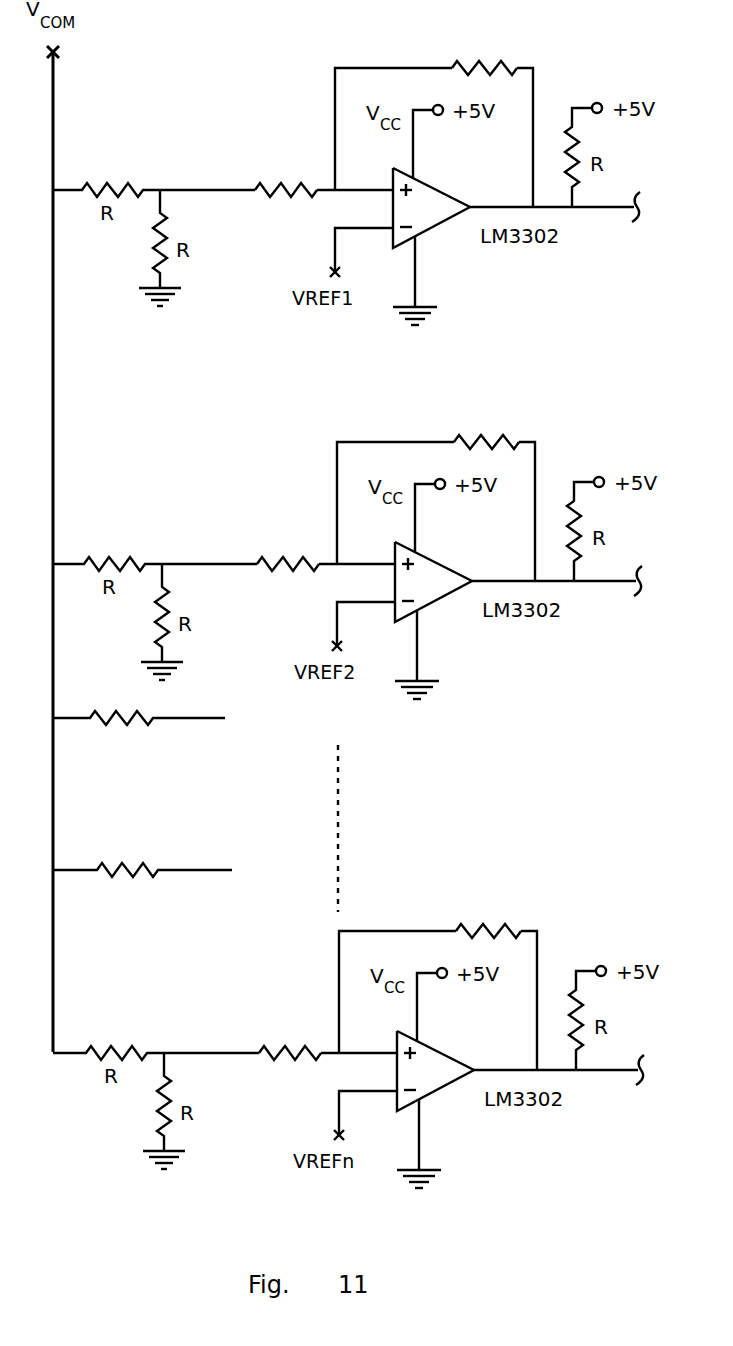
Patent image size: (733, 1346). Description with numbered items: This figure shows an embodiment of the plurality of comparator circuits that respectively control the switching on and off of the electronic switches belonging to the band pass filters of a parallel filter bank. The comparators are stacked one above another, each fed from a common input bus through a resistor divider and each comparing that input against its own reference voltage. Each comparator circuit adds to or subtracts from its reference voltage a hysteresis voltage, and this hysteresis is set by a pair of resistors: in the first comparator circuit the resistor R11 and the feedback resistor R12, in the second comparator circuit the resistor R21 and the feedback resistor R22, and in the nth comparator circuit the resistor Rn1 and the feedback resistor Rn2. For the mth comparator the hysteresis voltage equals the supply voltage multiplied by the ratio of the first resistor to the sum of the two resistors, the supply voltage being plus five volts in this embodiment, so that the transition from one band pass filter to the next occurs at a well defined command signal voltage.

The resistor R11 is at (286, 169).
The resistor R12 is at (484, 46).
The resistor R21 is at (288, 543).
The resistor R22 is at (486, 420).
The resistor Rn1 is at (290, 1032).
The resistor Rn2 is at (488, 909).